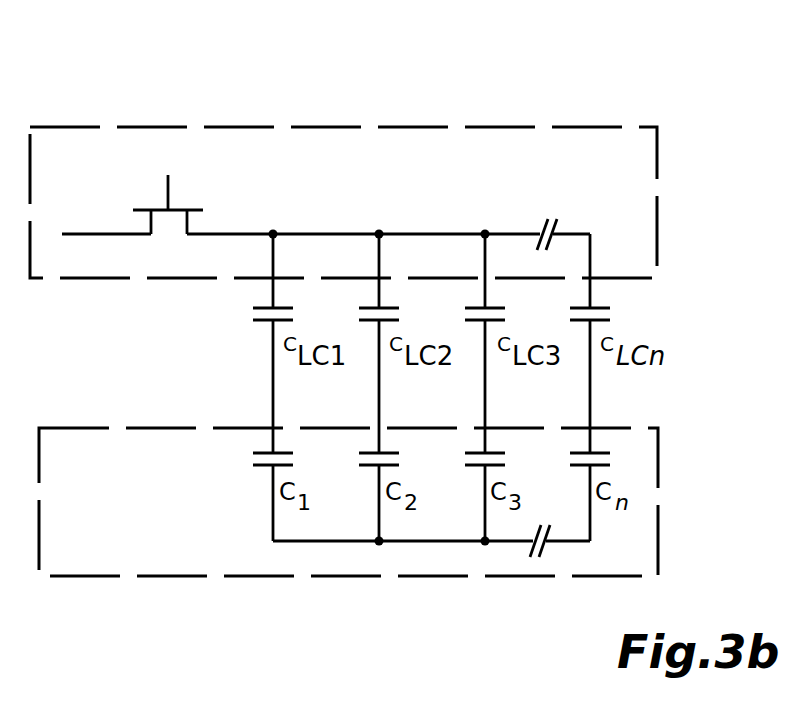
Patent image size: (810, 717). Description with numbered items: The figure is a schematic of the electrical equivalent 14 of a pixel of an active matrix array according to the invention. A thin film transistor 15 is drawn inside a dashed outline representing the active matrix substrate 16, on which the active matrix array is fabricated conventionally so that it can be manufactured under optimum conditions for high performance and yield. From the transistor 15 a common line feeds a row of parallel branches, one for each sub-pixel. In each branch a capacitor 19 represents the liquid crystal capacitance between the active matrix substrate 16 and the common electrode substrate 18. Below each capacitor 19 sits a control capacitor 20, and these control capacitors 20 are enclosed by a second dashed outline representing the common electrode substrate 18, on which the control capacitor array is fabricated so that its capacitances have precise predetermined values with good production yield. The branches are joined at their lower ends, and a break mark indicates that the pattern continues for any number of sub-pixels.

The electrical equivalent 14 is at (502, 21).
The thin film transistor 15 is at (171, 197).
The active matrix substrate 16 is at (380, 202).
The common electrode substrate 18 is at (387, 502).
The capacitor 19 is at (404, 301).
The control capacitor 20 is at (453, 450).